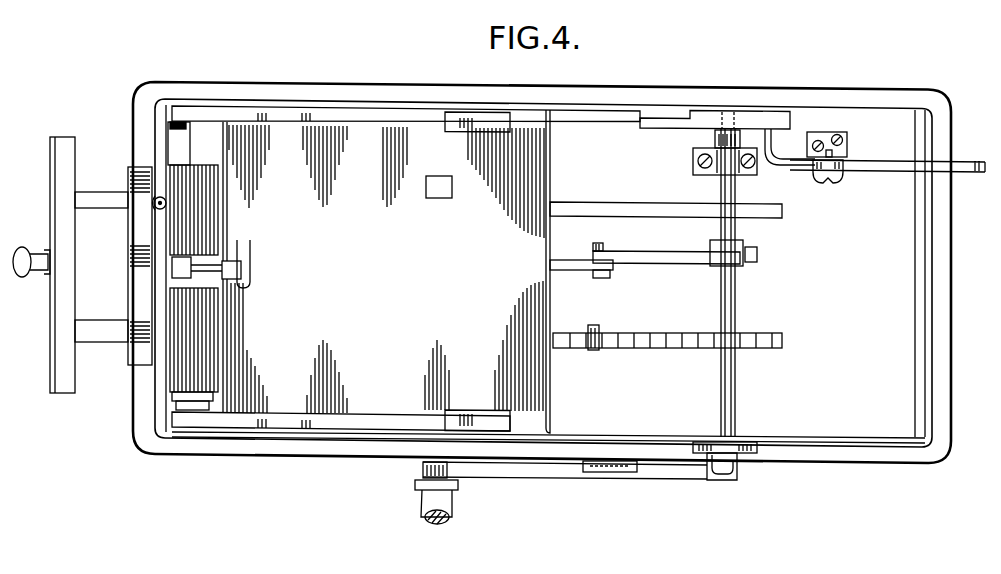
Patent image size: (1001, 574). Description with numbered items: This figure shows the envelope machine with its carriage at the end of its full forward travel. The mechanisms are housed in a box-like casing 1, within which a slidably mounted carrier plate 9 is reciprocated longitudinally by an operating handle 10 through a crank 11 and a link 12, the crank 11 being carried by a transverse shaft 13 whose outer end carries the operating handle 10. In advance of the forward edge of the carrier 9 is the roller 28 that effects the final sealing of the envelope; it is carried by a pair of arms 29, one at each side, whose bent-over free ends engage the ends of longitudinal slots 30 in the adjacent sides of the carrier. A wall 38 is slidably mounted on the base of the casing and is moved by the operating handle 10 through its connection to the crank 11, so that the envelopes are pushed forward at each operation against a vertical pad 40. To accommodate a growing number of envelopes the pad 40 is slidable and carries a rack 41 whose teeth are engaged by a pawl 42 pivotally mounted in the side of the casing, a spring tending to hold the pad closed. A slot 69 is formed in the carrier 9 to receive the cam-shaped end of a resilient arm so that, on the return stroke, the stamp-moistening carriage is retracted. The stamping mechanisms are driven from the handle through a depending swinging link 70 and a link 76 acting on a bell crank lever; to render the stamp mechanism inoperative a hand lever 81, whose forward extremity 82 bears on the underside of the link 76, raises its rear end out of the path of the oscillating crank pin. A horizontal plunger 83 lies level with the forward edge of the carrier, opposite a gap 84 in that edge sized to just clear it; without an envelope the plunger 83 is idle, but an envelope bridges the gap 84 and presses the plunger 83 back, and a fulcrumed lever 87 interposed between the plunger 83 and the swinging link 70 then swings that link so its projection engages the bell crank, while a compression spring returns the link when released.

The casing 1 is at (947, 301).
The carrier plate 9 is at (228, 150).
The operating handle 10 is at (679, 476).
The crank 11 is at (681, 258).
The link 12 is at (569, 272).
The transverse shaft 13 is at (737, 290).
The roller 28 is at (210, 215).
The arms 29 is at (385, 118).
The longitudinal slots 30 is at (488, 124).
The wall 38 is at (145, 361).
The vertical pad 40 is at (65, 184).
The rack 41 is at (700, 340).
The pawl 42 is at (592, 343).
The slot 69 is at (440, 199).
The swinging link 70 is at (179, 143).
The link 76 is at (698, 118).
The lever 81 is at (906, 173).
The forward extremity 82 is at (772, 144).
The plunger 83 is at (244, 262).
The gap 84 is at (248, 286).
The fulcrumed lever 87 is at (157, 223).